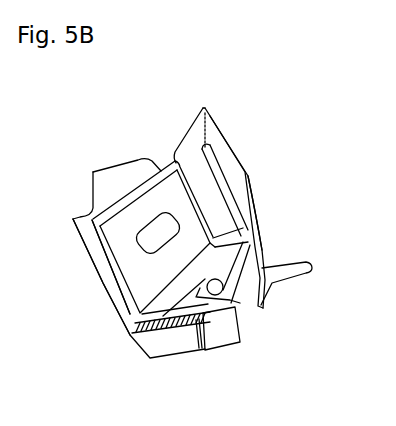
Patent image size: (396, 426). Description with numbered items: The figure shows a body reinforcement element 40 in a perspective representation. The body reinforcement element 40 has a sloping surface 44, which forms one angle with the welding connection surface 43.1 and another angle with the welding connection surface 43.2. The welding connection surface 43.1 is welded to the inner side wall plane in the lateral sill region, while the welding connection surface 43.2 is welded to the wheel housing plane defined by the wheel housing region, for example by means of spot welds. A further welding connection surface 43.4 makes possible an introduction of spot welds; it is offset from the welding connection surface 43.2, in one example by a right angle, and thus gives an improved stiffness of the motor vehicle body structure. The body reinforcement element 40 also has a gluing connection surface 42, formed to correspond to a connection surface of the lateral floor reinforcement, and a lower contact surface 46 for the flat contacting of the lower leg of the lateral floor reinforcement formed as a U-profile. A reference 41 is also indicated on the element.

The body reinforcement element 40 is at (290, 80).
The curved back wall 41 is at (264, 239).
The gluing connection surface 42 is at (250, 176).
The welding connection surface 43.1 is at (108, 280).
The welding connection surface 43.2 is at (209, 105).
The welding connection surface 43.4 is at (288, 263).
The sloping surface 44 is at (142, 208).
The lower contact surface 46 is at (214, 300).